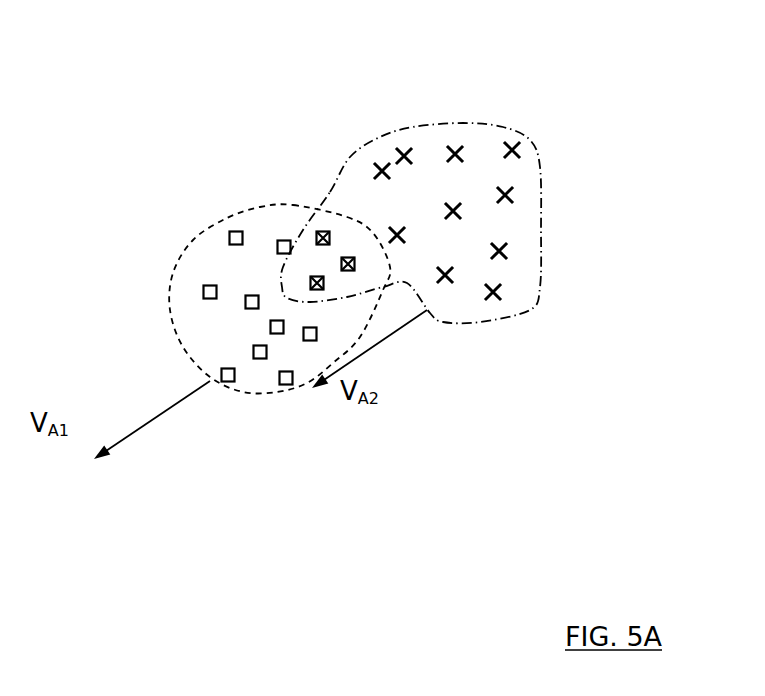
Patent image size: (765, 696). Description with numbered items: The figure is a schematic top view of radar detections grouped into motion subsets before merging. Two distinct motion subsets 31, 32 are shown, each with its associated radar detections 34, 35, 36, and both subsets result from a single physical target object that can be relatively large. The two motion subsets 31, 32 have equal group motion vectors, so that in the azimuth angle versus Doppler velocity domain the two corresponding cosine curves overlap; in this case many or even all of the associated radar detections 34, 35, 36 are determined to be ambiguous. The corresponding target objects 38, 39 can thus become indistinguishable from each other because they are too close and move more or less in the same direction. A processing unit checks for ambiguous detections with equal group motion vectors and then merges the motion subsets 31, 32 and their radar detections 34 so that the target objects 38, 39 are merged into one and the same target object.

The motion subset 31 is at (207, 250).
The motion subset 32 is at (483, 150).
The radar detection 34 is at (236, 230).
The radar detection 35 is at (404, 148).
The radar detection 36 is at (322, 230).
The target object 38 is at (275, 388).
The target object 39 is at (540, 222).